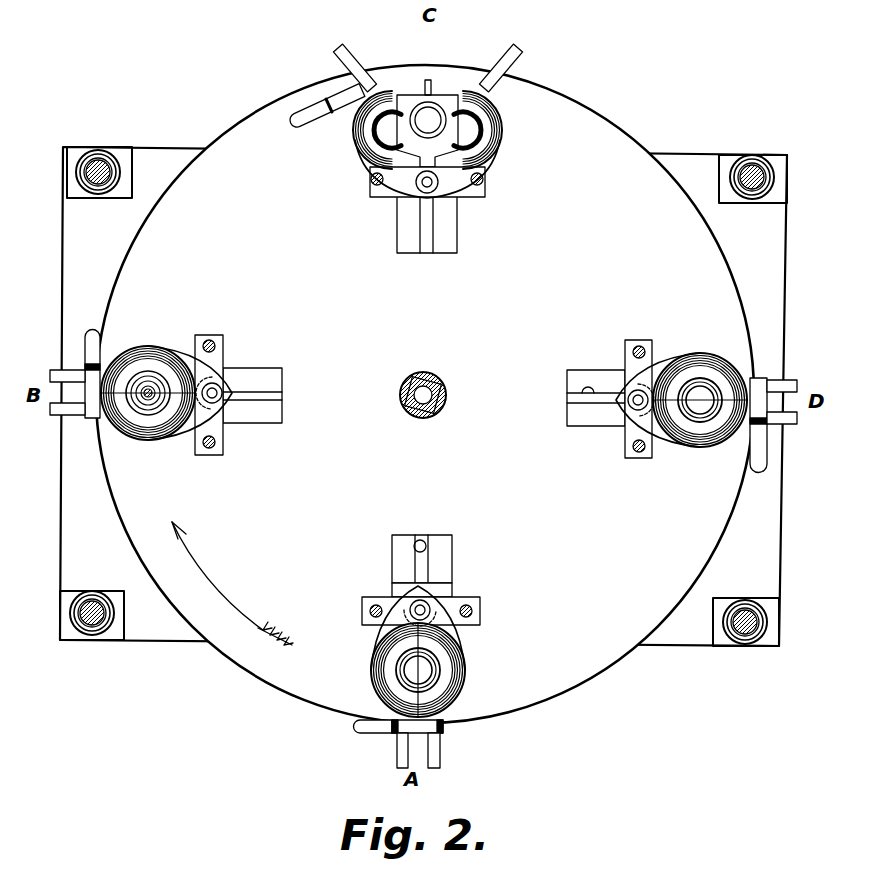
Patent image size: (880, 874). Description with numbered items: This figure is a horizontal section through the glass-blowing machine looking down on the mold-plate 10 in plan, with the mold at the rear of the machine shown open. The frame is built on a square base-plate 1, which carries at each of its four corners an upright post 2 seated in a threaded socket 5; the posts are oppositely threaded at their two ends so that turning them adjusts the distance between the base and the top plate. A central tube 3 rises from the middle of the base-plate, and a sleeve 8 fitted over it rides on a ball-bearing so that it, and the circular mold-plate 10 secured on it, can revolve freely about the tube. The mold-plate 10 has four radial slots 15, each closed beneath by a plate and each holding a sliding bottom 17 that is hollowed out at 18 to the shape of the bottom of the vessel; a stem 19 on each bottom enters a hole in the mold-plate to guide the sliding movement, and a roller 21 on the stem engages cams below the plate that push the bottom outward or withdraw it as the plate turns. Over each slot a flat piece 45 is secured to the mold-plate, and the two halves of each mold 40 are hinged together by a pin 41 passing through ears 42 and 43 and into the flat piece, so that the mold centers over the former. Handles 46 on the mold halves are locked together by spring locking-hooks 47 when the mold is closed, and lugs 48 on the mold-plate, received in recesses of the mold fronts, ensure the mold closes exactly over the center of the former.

The base-plate 1 is at (63, 523).
The upright or post 2 is at (90, 171).
The central tube 3 is at (444, 388).
The threaded socket 5 is at (103, 153).
The sleeve 8 is at (441, 402).
The mold-plate 10 is at (425, 394).
The slot 15 is at (402, 241).
The sliding bottom 17 is at (406, 100).
The hollow 18 is at (438, 108).
The stem 19 is at (430, 232).
The roller 21 is at (580, 404).
The mold 40 is at (360, 134).
The hinge pin 41 is at (418, 191).
The ear 42 is at (447, 194).
The ear 43 is at (378, 183).
The flat piece 45 is at (486, 181).
The handle 46 is at (347, 58).
The spring locking-hook 47 is at (320, 92).
The lug 48 is at (429, 80).